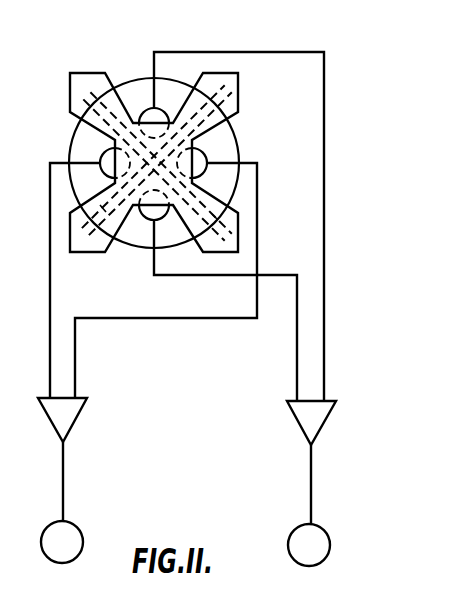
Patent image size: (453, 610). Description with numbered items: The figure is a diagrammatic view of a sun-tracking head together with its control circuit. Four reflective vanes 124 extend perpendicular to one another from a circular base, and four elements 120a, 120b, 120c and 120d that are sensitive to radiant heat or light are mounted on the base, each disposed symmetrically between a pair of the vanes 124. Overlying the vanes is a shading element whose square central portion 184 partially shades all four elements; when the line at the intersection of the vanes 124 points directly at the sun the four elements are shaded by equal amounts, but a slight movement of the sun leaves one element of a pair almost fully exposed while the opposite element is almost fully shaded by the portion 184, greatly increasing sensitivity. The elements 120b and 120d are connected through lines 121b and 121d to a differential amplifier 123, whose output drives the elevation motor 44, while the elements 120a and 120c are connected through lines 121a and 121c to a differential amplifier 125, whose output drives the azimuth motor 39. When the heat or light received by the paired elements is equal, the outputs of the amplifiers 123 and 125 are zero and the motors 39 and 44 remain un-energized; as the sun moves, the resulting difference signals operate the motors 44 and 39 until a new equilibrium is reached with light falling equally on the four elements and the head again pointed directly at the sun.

The azimuth motor 39 is at (70, 542).
The elevation motor 44 is at (302, 551).
The element sensitive to radiant heat or light 120a is at (194, 163).
The element sensitive to radiant heat or light 120b is at (158, 107).
The element sensitive to radiant heat or light 120c is at (101, 163).
The element sensitive to radiant heat or light 120d is at (152, 212).
The line 121a is at (142, 319).
The line 121b is at (324, 142).
The line 121c is at (50, 317).
The line 121d is at (278, 277).
The differential amplifier 123 is at (306, 422).
The reflective vane 124 is at (123, 95).
The differential amplifier 125 is at (66, 418).
The square central portion 184 is at (188, 182).